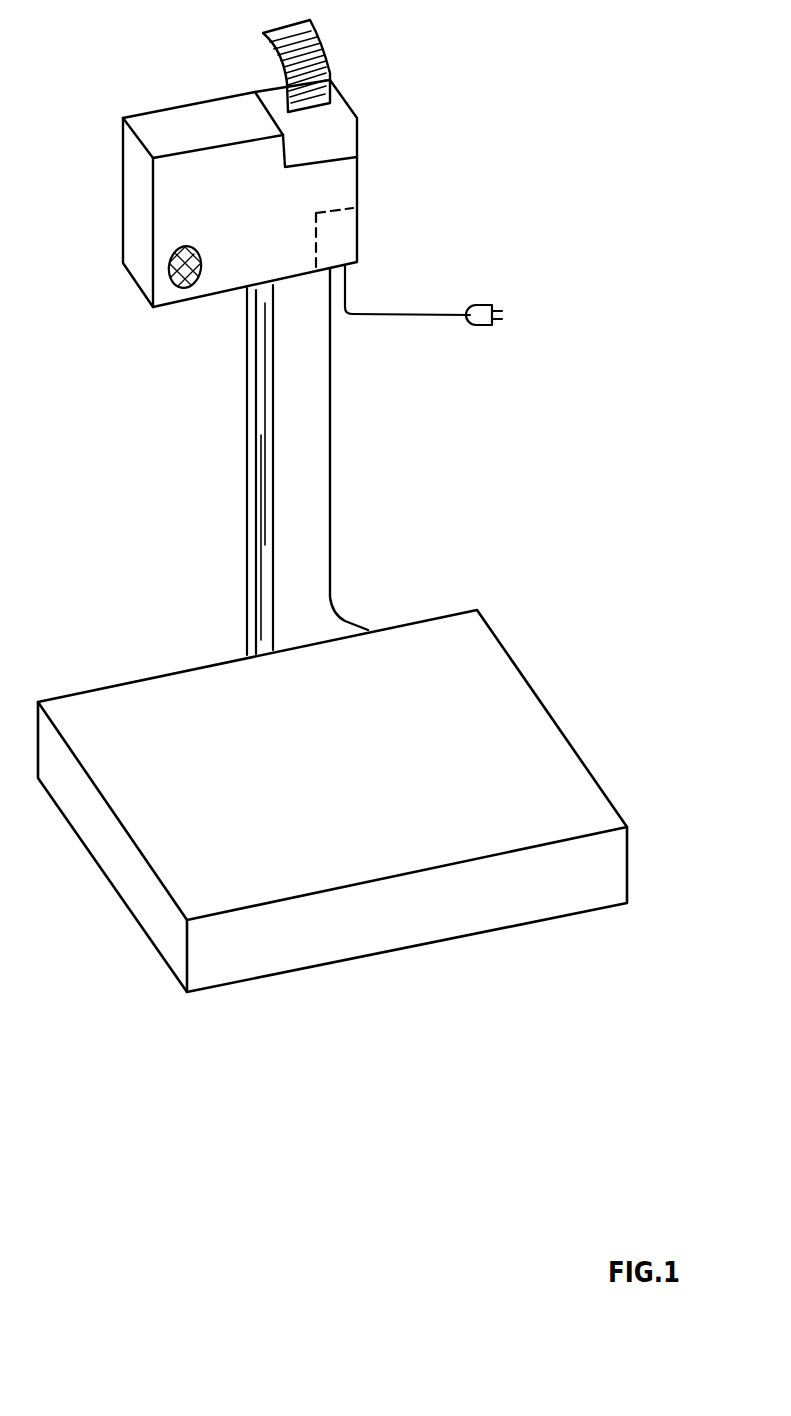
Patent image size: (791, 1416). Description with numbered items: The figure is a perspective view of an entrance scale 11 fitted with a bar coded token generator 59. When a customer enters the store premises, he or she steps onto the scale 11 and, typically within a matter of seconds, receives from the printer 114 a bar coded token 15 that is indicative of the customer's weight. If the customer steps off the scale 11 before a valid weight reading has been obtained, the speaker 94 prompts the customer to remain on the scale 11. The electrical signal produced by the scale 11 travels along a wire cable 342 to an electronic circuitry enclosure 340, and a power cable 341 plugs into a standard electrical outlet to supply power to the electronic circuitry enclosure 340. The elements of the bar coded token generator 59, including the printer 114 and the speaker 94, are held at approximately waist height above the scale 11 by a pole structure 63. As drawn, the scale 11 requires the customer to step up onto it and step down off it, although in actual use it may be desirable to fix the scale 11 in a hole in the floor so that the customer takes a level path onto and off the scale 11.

The entrance scale 11 is at (418, 620).
The bar coded token 15 is at (321, 40).
The bar coded token generator 59 is at (137, 182).
The pole structure 63 is at (247, 448).
The speaker 94 is at (167, 265).
The printer 114 is at (338, 137).
The electronic circuitry enclosure 340 is at (342, 232).
The power cable 341 is at (423, 313).
The wire cable 342 is at (330, 365).